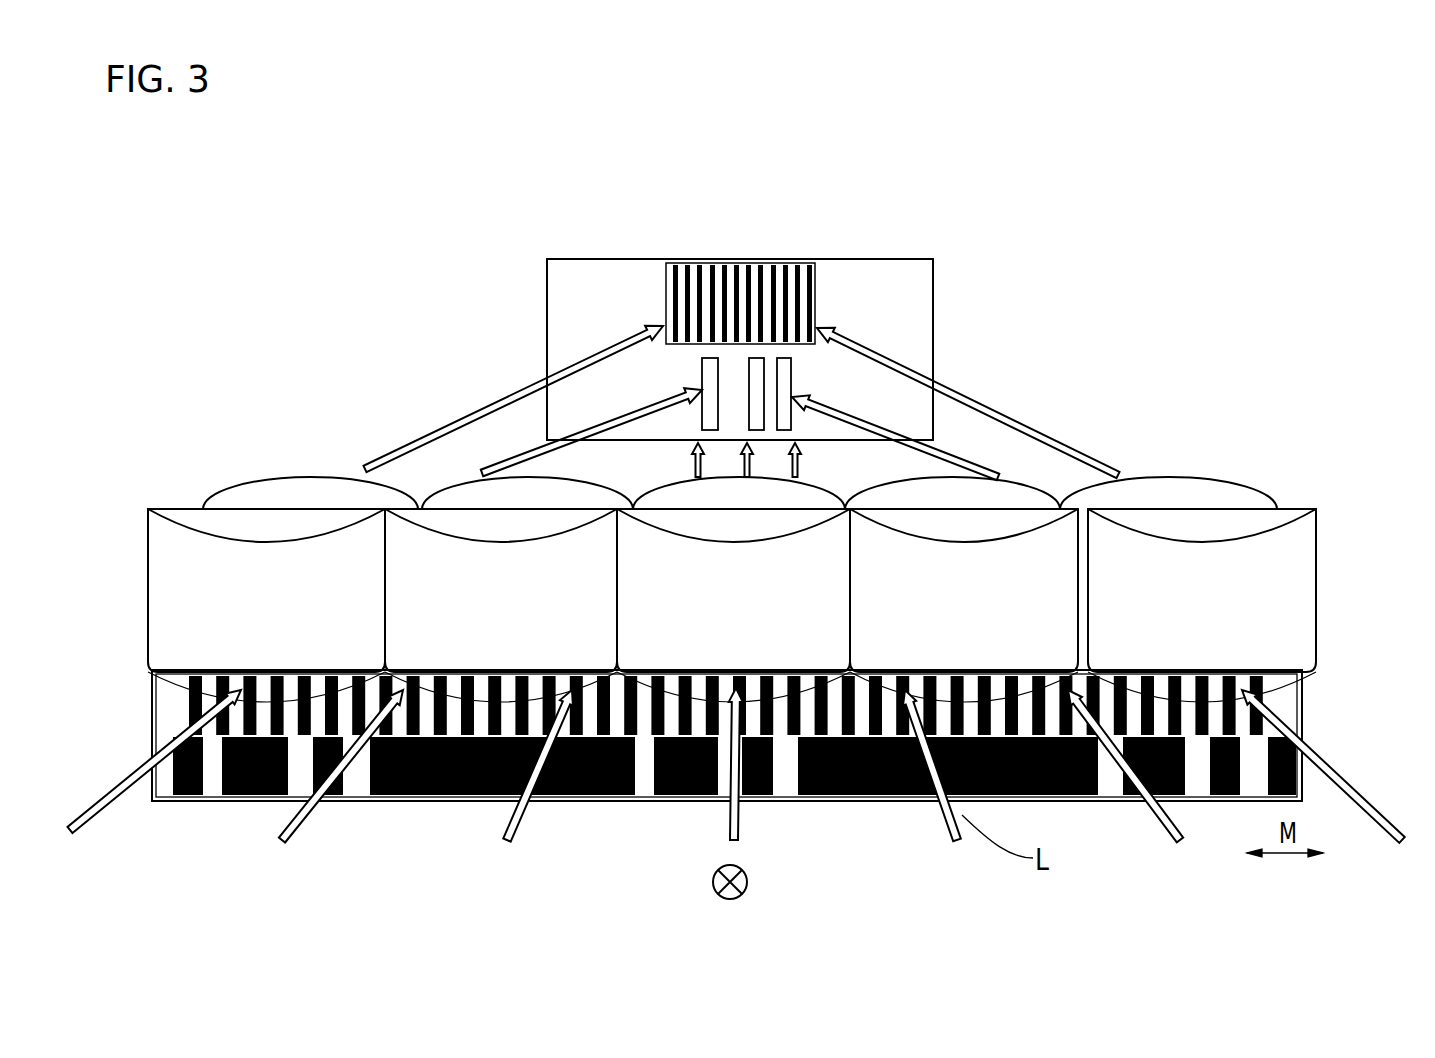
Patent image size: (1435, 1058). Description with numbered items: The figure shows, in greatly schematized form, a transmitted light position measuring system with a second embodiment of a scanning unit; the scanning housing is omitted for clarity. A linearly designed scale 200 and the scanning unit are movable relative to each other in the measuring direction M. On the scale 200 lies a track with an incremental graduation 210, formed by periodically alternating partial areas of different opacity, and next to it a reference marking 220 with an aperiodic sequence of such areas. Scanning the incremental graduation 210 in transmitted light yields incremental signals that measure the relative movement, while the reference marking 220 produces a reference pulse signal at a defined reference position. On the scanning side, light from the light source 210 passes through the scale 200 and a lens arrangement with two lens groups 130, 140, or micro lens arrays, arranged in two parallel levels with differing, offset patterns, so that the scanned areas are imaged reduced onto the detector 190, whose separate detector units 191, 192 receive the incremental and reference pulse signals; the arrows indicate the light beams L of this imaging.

The lens group 130 is at (1290, 562).
The lens group 140 is at (1217, 492).
The detector 190 is at (918, 323).
The detector unit 191 is at (775, 292).
The detector unit 192 is at (703, 370).
The scale 200 is at (142, 808).
The incremental graduation 210 is at (185, 705).
The reference marking 220 is at (245, 795).